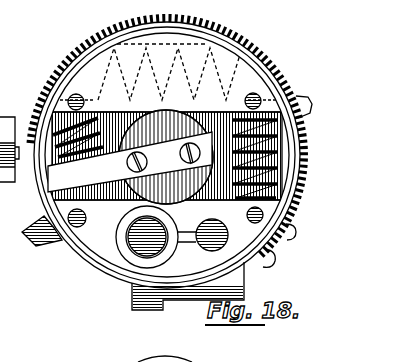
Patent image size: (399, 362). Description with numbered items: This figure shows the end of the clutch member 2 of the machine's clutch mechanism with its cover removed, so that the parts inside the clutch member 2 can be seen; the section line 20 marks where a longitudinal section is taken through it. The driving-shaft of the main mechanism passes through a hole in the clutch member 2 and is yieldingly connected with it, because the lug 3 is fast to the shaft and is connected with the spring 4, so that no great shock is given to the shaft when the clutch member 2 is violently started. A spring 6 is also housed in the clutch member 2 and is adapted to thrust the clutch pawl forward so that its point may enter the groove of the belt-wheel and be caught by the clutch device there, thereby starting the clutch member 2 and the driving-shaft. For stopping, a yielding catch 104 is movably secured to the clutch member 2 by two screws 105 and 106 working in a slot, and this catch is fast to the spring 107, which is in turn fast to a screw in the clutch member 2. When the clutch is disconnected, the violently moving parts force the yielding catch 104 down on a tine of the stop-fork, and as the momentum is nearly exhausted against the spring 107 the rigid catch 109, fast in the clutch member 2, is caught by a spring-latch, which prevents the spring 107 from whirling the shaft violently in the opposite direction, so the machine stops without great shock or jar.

The section line 20 is at (143, 255).
The spring 107 is at (262, 44).
The lug 3 is at (130, 162).
The spring 6 is at (90, 216).
The spring 4 is at (246, 214).
The clutch member 2 is at (172, 241).
The screw 106 is at (296, 230).
The screw 105 is at (278, 259).
The rigid catch 109 is at (46, 247).
The yielding catch 104 is at (151, 316).